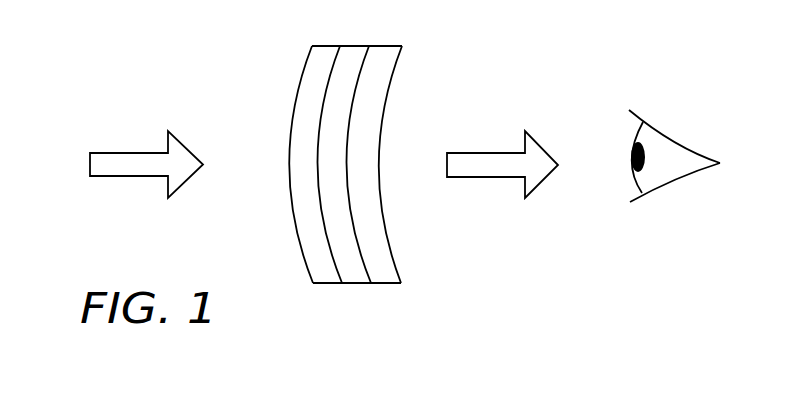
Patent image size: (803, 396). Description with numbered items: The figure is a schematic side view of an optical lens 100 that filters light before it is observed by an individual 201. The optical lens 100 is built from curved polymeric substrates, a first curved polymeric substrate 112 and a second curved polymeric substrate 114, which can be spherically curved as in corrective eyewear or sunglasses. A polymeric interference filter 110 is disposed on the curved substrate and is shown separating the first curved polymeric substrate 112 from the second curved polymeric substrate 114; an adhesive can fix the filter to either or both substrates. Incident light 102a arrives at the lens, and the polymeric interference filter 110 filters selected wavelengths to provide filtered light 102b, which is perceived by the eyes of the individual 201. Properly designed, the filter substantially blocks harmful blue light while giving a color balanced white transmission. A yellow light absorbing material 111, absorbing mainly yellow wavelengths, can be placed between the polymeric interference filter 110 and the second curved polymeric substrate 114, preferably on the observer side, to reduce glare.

The optical lens 100 is at (335, 166).
The incident light 102a is at (137, 153).
The filtered light 102b is at (492, 153).
The polymeric interference filter 110 is at (355, 54).
The yellow light absorbing material 111 is at (371, 283).
The first curved polymeric substrate 112 is at (325, 54).
The second curved polymeric substrate 114 is at (388, 275).
The individual 201 is at (668, 140).